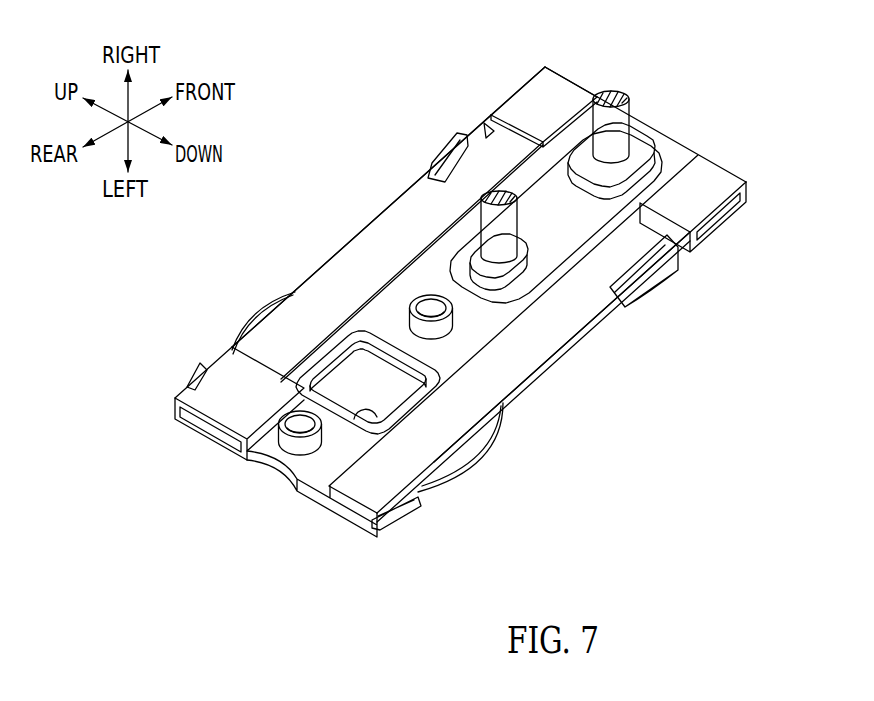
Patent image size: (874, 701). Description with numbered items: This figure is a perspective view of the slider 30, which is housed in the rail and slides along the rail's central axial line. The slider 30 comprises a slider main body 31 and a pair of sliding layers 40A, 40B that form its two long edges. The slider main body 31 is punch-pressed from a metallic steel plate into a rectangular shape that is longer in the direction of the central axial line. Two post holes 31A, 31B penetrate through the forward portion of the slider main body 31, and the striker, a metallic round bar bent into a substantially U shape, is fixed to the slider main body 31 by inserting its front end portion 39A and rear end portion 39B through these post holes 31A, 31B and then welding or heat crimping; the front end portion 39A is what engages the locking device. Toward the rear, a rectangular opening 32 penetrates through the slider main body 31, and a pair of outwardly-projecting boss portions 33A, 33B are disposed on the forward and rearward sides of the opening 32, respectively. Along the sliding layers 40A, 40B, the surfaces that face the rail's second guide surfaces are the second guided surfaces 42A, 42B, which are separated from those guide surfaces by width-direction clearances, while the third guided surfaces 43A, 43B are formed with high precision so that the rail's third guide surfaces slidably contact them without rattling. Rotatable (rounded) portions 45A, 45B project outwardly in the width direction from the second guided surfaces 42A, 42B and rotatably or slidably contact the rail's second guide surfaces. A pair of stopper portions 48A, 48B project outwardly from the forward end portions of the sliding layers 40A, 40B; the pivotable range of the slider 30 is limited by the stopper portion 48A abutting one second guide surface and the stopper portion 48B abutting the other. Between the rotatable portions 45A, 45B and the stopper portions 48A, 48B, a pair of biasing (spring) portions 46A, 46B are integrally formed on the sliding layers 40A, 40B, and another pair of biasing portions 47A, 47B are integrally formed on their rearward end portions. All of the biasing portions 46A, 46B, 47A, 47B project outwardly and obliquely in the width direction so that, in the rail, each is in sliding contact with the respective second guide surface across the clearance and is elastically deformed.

The slider 30 is at (338, 124).
The slider main body 31 is at (680, 147).
The post hole 31A is at (620, 155).
The post hole 31B is at (500, 257).
The rectangular opening 32 is at (297, 481).
The boss portion 33A is at (431, 323).
The boss portion 33B is at (298, 434).
The front end portion 39A is at (613, 138).
The rear end portion 39B is at (500, 238).
The sliding layer 40A is at (368, 220).
The sliding layer 40B is at (567, 355).
The second guided surface 42A is at (336, 252).
The second guided surface 42B is at (537, 380).
The third guided surface 43A is at (568, 103).
The third guided surface 43B is at (690, 182).
The rotatable portion 45A is at (268, 303).
The rotatable portion 45B is at (457, 467).
The biasing portion 46A is at (453, 140).
The biasing portion 46B is at (670, 282).
The biasing portion 47A is at (202, 365).
The biasing portion 47B is at (410, 511).
The stopper portion 48A is at (508, 97).
The stopper portion 48B is at (720, 225).